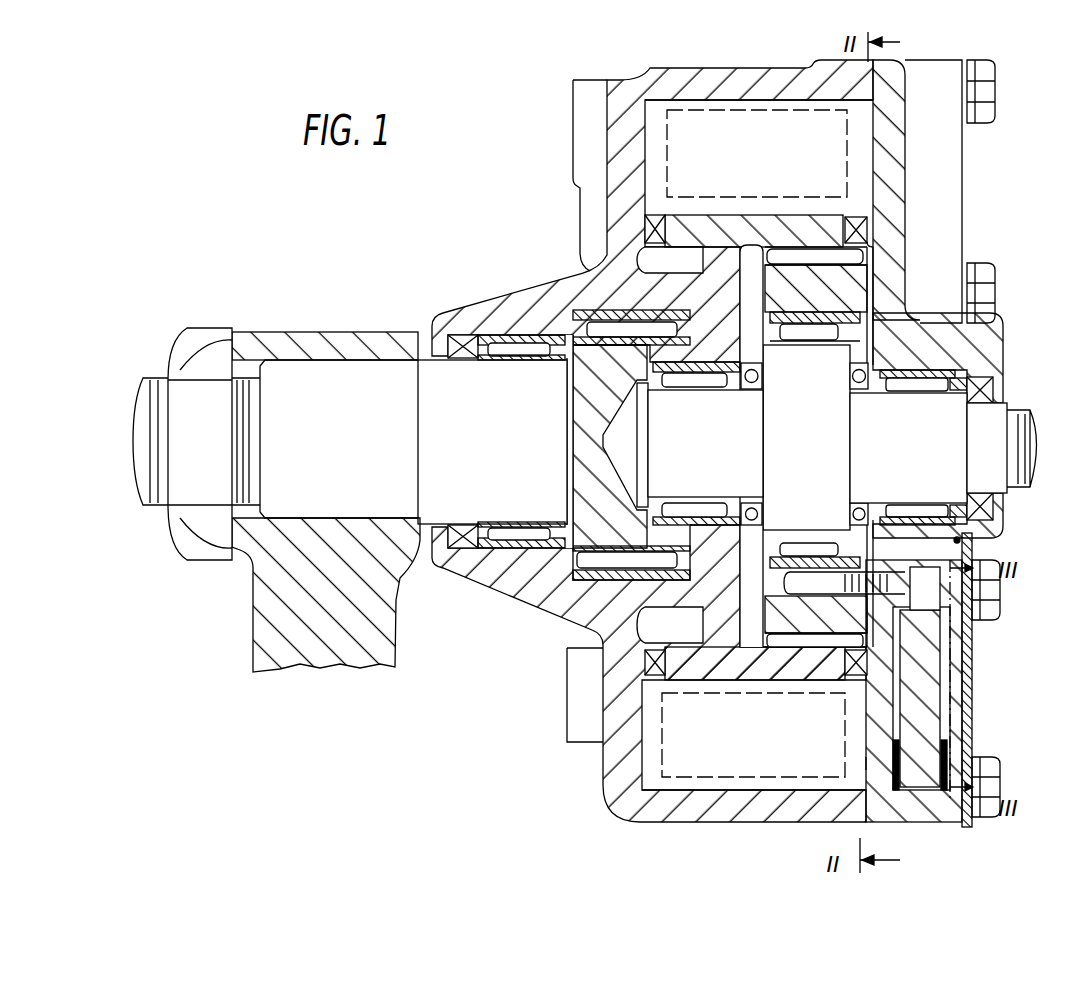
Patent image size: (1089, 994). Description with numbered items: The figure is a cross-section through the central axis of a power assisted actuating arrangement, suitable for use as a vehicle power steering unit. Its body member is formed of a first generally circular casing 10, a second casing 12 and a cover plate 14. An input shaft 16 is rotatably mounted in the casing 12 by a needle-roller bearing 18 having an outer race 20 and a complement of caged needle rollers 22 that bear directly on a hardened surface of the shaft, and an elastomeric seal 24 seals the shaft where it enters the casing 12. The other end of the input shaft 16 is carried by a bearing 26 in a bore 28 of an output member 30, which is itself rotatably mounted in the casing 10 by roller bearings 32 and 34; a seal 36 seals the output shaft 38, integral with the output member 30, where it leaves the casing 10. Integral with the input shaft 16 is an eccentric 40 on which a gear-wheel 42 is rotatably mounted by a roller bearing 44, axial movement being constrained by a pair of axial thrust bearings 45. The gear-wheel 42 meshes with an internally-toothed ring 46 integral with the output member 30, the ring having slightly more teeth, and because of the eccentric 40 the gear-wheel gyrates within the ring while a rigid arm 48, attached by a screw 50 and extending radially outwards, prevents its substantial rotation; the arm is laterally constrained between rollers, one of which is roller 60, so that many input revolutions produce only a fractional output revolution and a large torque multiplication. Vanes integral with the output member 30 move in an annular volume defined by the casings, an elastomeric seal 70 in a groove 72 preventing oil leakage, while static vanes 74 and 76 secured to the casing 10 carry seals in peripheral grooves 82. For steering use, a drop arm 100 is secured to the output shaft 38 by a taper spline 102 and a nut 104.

The first casing 10 is at (575, 592).
The second casing 12 is at (892, 83).
The cover plate 14 is at (972, 718).
The input shaft 16 is at (1028, 412).
The needle-roller bearing 18 is at (952, 362).
The outer race 20 is at (925, 372).
The caged needle rollers 22 is at (922, 510).
The elastomeric seal 24 is at (990, 513).
The bearing 26 is at (701, 391).
The bore 28 is at (648, 437).
The output member 30 is at (597, 347).
The roller bearing 32 is at (526, 524).
The roller bearing 34 is at (587, 377).
The seal 36 is at (445, 335).
The output shaft 38 is at (492, 442).
The eccentric 40 is at (806, 437).
The gear-wheel 42 is at (832, 287).
The roller bearing 44 is at (790, 344).
The axial thrust bearings 45 is at (861, 387).
The internally-toothed ring 46 is at (800, 247).
The rigid arm 48 is at (922, 686).
The screw 50 is at (928, 598).
The roller 60 is at (866, 763).
The elastomeric seal 70 is at (645, 225).
The groove 72 is at (838, 215).
The static vane 74 is at (757, 153).
The static vane 76 is at (753, 735).
The peripheral grooves 82 is at (690, 105).
The drop arm 100 is at (323, 657).
The taper spline 102 is at (328, 518).
The nut 104 is at (208, 343).